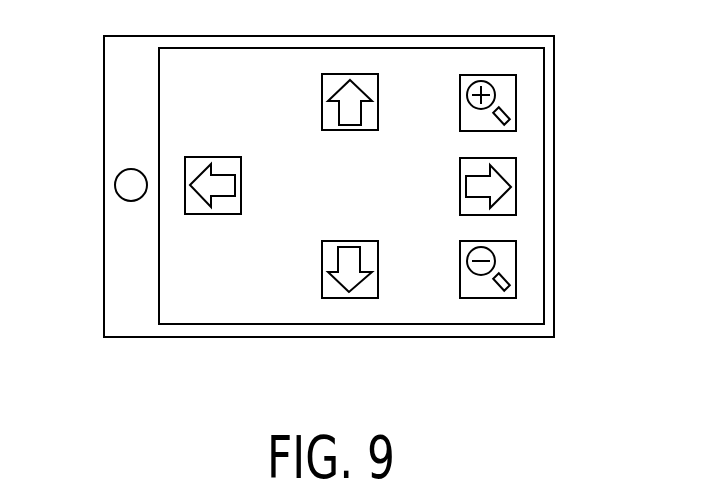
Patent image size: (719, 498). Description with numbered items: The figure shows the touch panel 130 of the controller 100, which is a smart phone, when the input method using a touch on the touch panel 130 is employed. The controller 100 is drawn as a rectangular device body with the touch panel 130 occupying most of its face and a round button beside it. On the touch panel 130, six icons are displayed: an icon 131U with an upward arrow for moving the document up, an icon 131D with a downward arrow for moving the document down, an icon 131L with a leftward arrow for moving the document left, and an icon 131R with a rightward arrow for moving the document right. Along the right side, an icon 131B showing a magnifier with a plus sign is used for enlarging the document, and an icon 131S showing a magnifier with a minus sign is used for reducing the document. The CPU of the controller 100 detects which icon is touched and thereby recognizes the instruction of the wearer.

The controller 100 is at (526, 36).
The touch panel 130 is at (417, 60).
The icon for moving the document up 131U is at (341, 74).
The icon for moving the document down 131D is at (348, 298).
The icon for moving the document left 131L is at (205, 157).
The icon for moving the document right 131R is at (516, 172).
The icon for enlarging the document 131B is at (516, 93).
The icon for reducing the document 131S is at (516, 262).